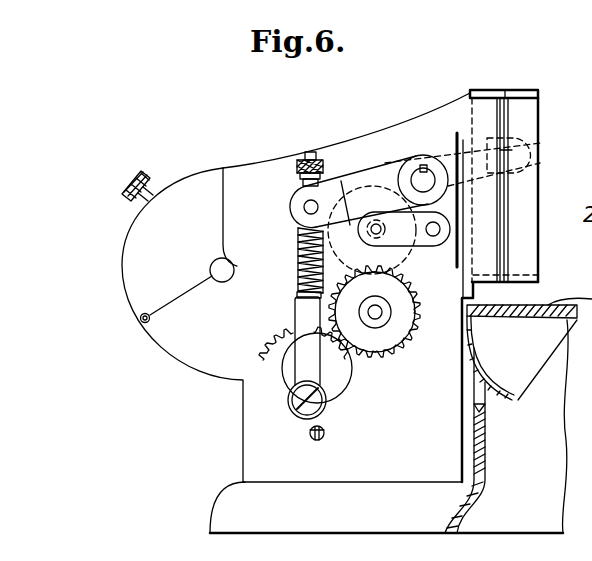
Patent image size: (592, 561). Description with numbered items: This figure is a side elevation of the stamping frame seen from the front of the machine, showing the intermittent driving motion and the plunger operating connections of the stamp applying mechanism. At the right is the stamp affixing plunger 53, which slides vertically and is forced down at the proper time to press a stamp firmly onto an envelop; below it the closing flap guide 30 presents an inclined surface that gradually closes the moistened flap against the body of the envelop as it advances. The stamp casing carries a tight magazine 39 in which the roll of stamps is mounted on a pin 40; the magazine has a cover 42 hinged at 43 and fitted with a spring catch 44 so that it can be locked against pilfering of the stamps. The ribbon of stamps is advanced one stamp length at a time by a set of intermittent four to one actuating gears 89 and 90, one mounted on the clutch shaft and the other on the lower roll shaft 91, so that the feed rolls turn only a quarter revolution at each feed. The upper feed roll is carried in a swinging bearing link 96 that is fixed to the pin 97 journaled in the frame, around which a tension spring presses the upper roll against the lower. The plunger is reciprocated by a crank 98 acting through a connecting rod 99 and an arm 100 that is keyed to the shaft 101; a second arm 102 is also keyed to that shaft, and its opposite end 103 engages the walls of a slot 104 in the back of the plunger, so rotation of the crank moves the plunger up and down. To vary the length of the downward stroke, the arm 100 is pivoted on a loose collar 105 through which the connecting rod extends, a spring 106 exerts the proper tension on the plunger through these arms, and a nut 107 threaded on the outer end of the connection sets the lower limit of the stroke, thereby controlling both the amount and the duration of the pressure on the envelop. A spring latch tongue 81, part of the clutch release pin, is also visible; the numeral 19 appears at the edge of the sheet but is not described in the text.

The closing flap guide 30 is at (500, 402).
The magazine 39 is at (187, 352).
The pin 40 is at (217, 262).
The cover 42 is at (140, 242).
The hinge 43 is at (143, 323).
The spring catch 44 is at (356, 244).
The plunger 53 is at (518, 90).
The spring latch tongue 81 is at (326, 435).
The intermittent actuating gear 89 is at (342, 380).
The intermittent actuating gear 90 is at (397, 343).
The lower roll shaft 91 is at (377, 311).
The swinging bearing link 96 is at (405, 229).
The pin 97 is at (432, 231).
The crank 98 is at (288, 373).
The connecting rod 99 is at (308, 320).
The arm 100 is at (371, 175).
The shaft 101 is at (425, 168).
The arm 102 is at (480, 162).
The end of arm 103 is at (508, 151).
The slot 104 is at (489, 146).
The loose collar 105 is at (293, 193).
The spring 106 is at (297, 250).
The nut 107 is at (304, 158).
The frame 19 is at (584, 188).